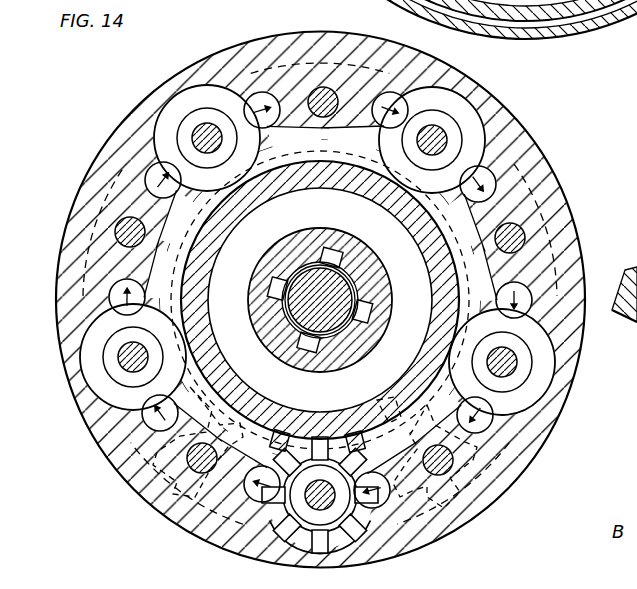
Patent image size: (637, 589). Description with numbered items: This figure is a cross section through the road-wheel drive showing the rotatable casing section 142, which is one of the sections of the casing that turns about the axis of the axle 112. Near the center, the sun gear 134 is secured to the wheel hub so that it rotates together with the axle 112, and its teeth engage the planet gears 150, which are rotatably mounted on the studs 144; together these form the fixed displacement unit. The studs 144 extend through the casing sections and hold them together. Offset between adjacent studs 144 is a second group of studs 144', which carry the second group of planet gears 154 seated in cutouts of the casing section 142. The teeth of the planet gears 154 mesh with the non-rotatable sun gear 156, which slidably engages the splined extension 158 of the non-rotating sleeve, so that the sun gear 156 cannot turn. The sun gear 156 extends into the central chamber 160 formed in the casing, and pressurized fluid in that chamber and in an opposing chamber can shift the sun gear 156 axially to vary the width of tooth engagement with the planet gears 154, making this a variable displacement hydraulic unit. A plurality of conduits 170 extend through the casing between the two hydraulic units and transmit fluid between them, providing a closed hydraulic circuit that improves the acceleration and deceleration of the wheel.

The casing section 142 is at (524, 153).
The studs 144 is at (311, 266).
The second group of studs 144' is at (318, 314).
The second group of planet gears 154 is at (483, 132).
The conduits 170 is at (250, 96).
The central chamber 160 is at (352, 220).
The splined extension 158 is at (272, 283).
The axle 112 is at (353, 300).
The non-rotatable sun gear 156 is at (345, 410).
The sun gear 134 is at (397, 386).
The planet gears 150 is at (505, 463).